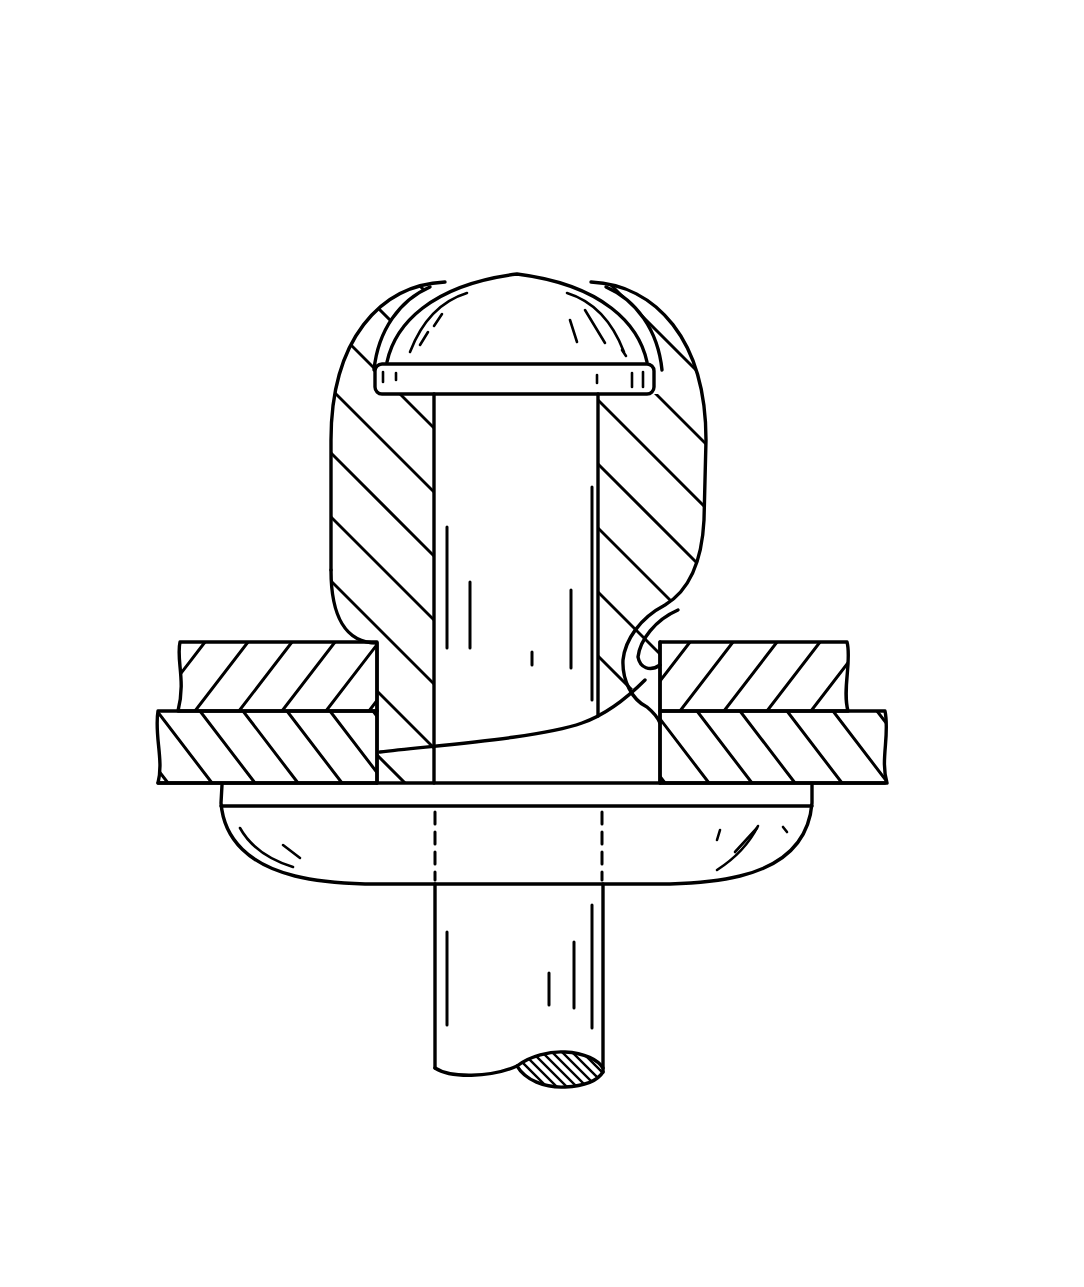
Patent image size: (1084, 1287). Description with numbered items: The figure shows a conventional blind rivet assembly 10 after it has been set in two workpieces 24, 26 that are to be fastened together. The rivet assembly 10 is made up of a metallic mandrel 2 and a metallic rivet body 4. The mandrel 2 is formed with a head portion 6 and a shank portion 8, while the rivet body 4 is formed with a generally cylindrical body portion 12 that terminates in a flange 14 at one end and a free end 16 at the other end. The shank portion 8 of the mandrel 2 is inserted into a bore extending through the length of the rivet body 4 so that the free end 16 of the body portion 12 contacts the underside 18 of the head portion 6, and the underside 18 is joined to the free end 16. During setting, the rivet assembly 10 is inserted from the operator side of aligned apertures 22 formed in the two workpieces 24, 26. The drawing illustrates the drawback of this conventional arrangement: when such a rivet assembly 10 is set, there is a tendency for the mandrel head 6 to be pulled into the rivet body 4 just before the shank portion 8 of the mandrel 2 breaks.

The rivet assembly 10 is at (513, 178).
The mandrel 2 is at (567, 268).
The head portion 6 is at (455, 314).
The free end 16 is at (386, 368).
The underside 18 is at (436, 398).
The body portion 12 is at (704, 410).
The rivet body 4 is at (728, 520).
The apertures 22 is at (700, 595).
The workpiece 24 is at (218, 653).
The workpiece 26 is at (213, 748).
The flange 14 is at (759, 842).
The shank portion 8 is at (446, 1045).